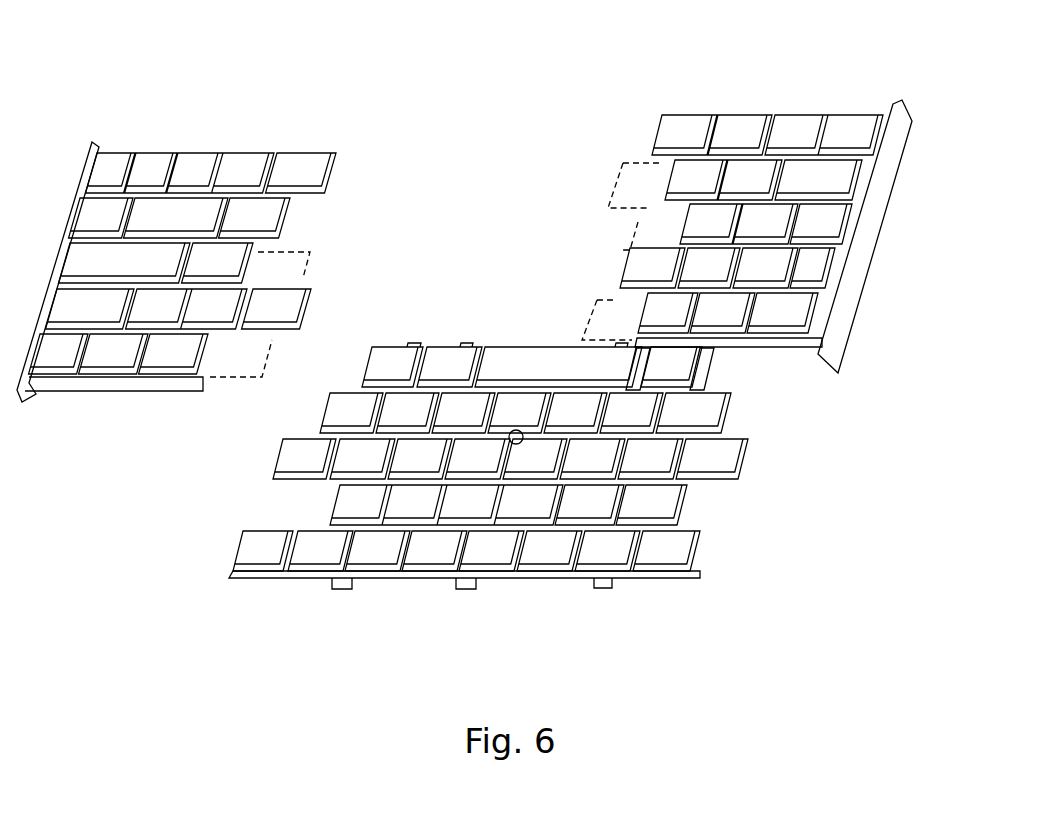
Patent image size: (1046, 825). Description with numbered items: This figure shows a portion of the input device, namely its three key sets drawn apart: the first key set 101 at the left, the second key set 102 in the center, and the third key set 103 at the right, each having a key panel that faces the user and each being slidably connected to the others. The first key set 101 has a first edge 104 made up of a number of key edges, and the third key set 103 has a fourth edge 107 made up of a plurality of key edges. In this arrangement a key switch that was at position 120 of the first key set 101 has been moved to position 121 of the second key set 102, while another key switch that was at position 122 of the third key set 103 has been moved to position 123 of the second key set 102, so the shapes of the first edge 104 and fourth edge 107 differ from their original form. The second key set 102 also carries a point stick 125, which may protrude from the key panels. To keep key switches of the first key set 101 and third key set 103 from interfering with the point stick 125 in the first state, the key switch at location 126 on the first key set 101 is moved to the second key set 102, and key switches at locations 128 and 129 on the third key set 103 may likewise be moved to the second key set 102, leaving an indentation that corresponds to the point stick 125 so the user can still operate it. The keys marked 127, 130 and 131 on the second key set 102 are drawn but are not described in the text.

The first key set 101 is at (214, 230).
The second key set 102 is at (508, 452).
The third key set 103 is at (715, 210).
The first edge 104 is at (313, 305).
The fourth edge 107 is at (634, 263).
The position 120 is at (233, 360).
The position 121 is at (260, 554).
The position 122 is at (598, 304).
The position 123 is at (668, 560).
The point stick 125 is at (515, 444).
The location 126 is at (308, 253).
The key 127 is at (292, 465).
The location 128 is at (635, 190).
The location 129 is at (628, 233).
The key 130 is at (695, 422).
The key 131 is at (704, 460).